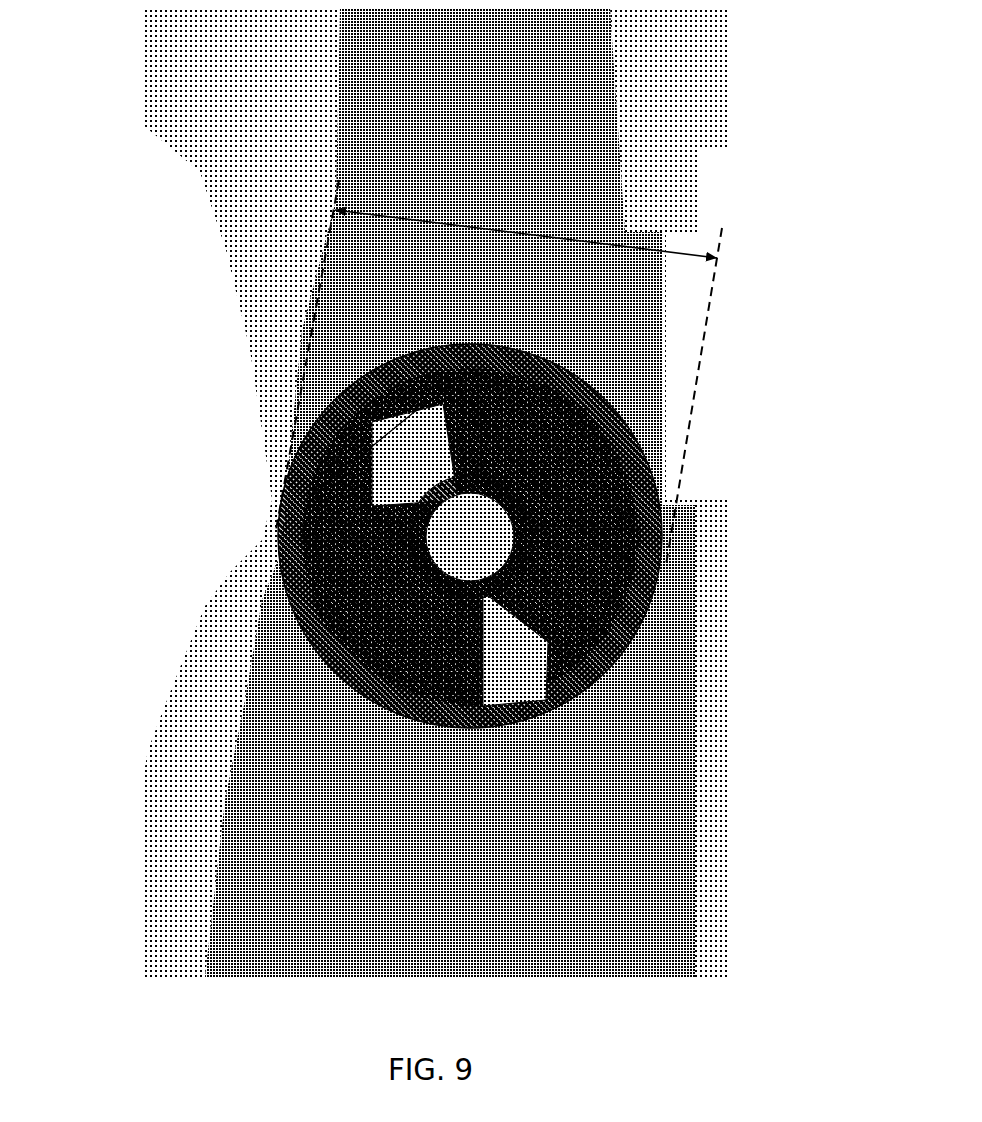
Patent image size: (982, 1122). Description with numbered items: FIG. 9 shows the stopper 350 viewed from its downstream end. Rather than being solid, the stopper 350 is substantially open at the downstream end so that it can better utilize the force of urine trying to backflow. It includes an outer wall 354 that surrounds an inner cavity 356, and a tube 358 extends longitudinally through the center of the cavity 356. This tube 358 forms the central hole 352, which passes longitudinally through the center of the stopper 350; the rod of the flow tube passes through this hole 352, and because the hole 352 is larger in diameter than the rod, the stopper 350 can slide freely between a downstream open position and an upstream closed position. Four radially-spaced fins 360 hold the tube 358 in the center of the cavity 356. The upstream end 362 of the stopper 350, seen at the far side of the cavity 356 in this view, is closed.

The stopper 350 is at (317, 130).
The hole 352 is at (470, 521).
The outer wall 354 is at (306, 638).
The inner cavity 356 is at (565, 447).
The tube 358 is at (428, 567).
The fins 360 is at (446, 812).
The upstream end 362 is at (353, 436).